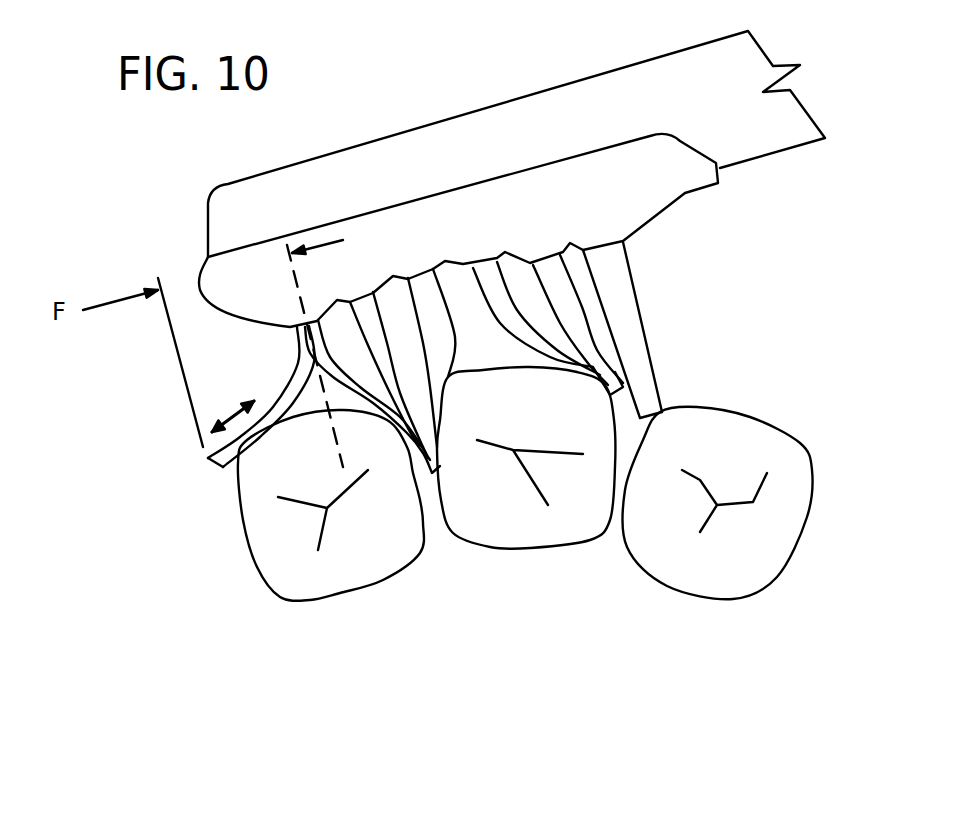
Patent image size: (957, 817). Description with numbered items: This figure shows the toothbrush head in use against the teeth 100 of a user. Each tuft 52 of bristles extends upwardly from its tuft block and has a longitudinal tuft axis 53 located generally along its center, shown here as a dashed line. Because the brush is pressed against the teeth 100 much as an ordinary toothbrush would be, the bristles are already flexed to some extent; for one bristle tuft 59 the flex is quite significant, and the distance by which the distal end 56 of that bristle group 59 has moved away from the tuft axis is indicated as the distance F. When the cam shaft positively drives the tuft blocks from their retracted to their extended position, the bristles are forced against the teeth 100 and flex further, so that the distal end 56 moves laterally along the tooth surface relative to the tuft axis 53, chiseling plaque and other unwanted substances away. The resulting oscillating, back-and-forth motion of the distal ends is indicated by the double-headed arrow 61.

The tuft 52 is at (643, 353).
The longitudinal tuft axis 53 is at (290, 275).
The distal end 56 is at (215, 464).
The bristle tuft 59 is at (297, 365).
The double-headed arrow 61 is at (230, 414).
The teeth 100 is at (777, 587).